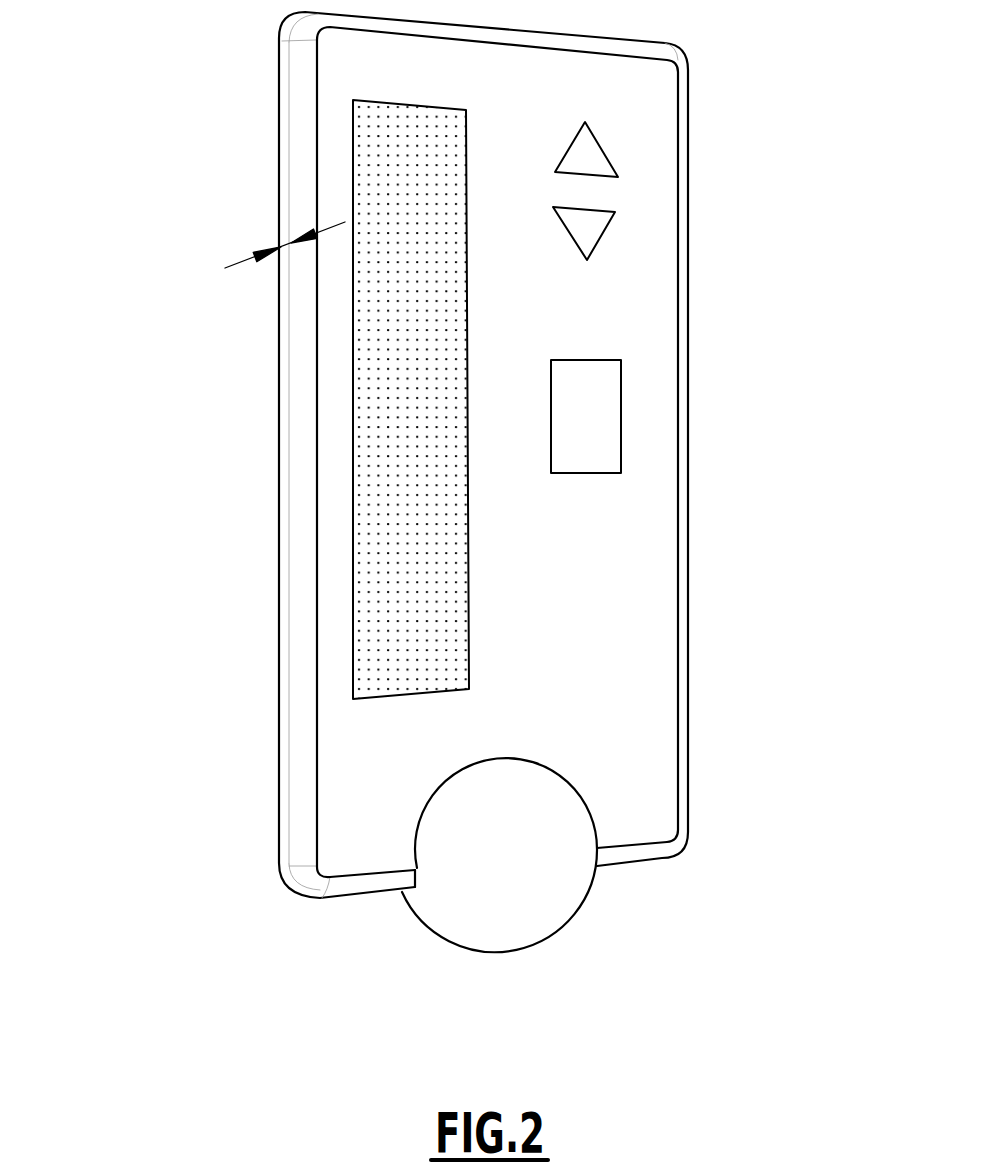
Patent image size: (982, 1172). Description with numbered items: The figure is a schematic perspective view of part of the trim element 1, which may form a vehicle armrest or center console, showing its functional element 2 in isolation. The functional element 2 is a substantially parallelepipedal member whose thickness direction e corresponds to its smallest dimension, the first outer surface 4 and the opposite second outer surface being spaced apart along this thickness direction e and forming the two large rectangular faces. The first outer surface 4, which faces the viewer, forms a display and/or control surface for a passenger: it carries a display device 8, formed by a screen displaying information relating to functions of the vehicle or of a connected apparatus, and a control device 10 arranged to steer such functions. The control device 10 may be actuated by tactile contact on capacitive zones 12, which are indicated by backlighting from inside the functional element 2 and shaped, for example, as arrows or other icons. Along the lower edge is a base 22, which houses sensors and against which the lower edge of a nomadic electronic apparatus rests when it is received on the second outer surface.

The trim element 1 is at (436, 508).
The functional element 2 is at (332, 403).
The first outer surface 4 is at (368, 747).
The display device 8 is at (388, 152).
The control device 10 is at (585, 157).
The zones allowing actuation 12 is at (583, 138).
The base 22 is at (525, 900).
The thickness direction e is at (282, 241).